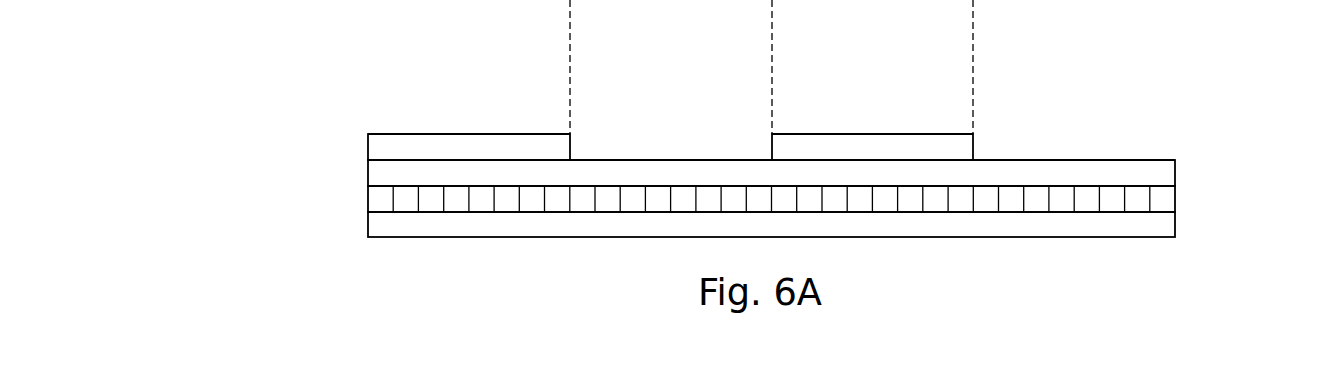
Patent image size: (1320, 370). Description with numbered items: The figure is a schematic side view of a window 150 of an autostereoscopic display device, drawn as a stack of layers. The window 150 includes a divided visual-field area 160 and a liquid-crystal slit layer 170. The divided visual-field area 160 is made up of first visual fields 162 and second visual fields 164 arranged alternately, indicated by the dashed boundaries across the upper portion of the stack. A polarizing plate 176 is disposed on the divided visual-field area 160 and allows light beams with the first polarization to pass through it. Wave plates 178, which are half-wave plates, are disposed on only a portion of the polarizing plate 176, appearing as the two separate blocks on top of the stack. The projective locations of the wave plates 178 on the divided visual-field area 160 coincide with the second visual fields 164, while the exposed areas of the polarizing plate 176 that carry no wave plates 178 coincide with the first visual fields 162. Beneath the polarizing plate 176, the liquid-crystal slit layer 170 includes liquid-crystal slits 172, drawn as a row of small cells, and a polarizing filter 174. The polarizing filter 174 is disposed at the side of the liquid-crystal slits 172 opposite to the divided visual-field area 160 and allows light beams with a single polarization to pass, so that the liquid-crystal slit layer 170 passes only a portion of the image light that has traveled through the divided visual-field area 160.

The window 150 is at (199, 52).
The divided visual-field area 160 is at (1190, 163).
The first visual fields 162 is at (677, 160).
The second visual fields 164 is at (470, 133).
The liquid-crystal slit layer 170 is at (258, 190).
The liquid-crystal slits 172 is at (368, 197).
The polarizing filter 174 is at (368, 222).
The polarizing plate 176 is at (368, 172).
The wave plates 178 is at (368, 143).